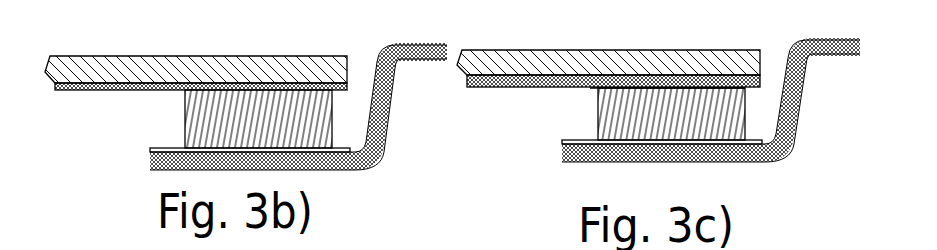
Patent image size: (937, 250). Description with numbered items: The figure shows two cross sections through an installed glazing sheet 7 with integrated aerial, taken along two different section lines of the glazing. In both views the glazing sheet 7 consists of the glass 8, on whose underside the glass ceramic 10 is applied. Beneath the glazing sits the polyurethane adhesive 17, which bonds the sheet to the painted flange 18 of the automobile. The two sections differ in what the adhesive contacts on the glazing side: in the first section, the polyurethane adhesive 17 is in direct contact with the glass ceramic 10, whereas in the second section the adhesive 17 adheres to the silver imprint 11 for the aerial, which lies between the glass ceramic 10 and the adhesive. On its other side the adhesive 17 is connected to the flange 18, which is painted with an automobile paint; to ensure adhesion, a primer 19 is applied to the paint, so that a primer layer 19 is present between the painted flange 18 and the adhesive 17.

In FIG. 3B, the glazing sheet 7 is at (122, 52).
In FIG. 3C, the glazing sheet 7 is at (527, 47).
In FIG. 3B, the glass 8 is at (312, 62).
In FIG. 3C, the glass 8 is at (725, 58).
In FIG. 3B, the glass ceramic 10 is at (113, 92).
In FIG. 3C, the glass ceramic 10 is at (532, 82).
In FIG. 3C, the silver imprint 11 is at (588, 88).
In FIG. 3B, the polyurethane adhesive 17 is at (185, 127).
In FIG. 3C, the polyurethane adhesive 17 is at (598, 118).
In FIG. 3B, the flange 18 is at (150, 168).
In FIG. 3C, the flange 18 is at (562, 161).
In FIG. 3B, the primer 19 is at (152, 149).
In FIG. 3C, the primer 19 is at (562, 141).